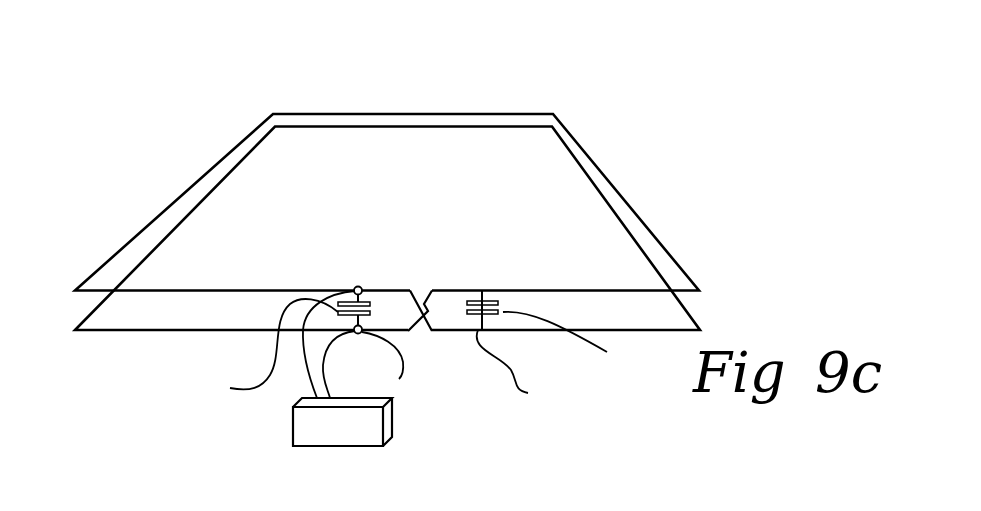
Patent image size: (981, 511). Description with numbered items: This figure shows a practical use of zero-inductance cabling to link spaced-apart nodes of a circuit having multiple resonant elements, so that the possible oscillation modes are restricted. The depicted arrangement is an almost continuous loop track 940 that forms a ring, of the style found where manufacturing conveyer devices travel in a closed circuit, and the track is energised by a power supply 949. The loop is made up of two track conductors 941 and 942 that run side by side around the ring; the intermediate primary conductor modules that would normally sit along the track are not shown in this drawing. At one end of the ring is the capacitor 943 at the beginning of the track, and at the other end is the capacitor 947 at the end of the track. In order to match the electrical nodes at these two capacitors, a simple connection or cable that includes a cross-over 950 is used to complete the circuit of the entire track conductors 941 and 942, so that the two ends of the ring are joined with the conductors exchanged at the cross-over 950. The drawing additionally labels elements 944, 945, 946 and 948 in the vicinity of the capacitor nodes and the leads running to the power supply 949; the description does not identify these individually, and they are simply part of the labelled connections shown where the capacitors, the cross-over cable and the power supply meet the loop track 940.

The loop track 940 is at (622, 90).
The track conductor 941 is at (563, 123).
The track conductor 942 is at (610, 205).
The capacitor at the beginning 943 is at (256, 349).
The first connector terminal 944 is at (357, 286).
The connection lead 945 is at (373, 366).
The connection lead 946 is at (528, 375).
The capacitor at the end 947 is at (580, 343).
The second connector terminal 948 is at (481, 290).
The power supply 949 is at (468, 433).
The cross-over 950 is at (416, 293).